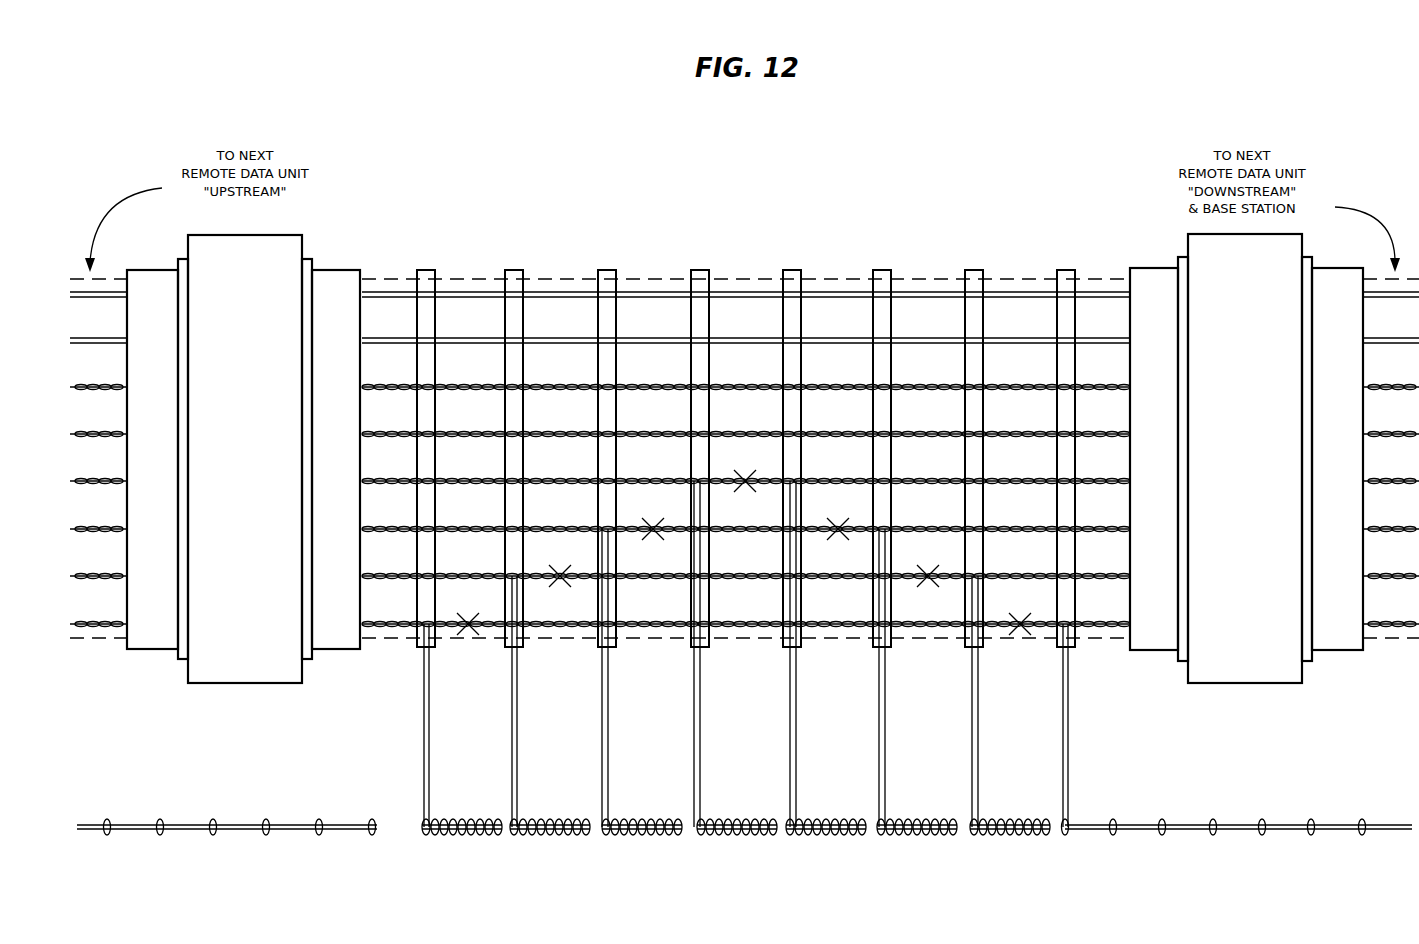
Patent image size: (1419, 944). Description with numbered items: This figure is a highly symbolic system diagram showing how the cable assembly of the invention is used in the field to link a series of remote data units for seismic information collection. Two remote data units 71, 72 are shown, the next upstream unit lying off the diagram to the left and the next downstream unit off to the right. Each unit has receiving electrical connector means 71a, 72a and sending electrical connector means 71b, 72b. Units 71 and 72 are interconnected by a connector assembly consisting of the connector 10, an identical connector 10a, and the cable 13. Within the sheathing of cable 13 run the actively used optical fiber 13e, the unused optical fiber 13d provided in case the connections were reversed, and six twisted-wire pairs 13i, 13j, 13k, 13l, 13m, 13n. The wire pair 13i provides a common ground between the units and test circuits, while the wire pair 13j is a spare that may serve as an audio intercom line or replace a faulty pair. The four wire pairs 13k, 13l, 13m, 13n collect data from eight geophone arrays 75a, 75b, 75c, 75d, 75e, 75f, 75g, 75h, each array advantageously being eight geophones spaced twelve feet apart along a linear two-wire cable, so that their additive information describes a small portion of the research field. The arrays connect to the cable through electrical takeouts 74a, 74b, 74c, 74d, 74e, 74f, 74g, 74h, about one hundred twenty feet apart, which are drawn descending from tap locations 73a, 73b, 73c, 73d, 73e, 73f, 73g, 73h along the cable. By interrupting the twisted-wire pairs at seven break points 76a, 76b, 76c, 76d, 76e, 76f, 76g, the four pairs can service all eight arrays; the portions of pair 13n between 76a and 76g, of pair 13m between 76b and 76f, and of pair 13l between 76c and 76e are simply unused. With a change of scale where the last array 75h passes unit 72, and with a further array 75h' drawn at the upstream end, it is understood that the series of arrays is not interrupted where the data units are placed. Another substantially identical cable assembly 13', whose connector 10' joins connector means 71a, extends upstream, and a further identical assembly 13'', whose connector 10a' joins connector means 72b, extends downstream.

The connector 10 is at (1154, 436).
The connector 10' is at (152, 438).
The connector 10a is at (342, 438).
The connector 10a' is at (1337, 436).
The cable 13 is at (746, 466).
The cable assembly 13' is at (98, 483).
The cable assembly 13'' is at (1391, 483).
The unused optical fiber 13d is at (447, 338).
The optical fiber 13e is at (445, 292).
The wire pair 13i is at (400, 387).
The wire pair 13j is at (400, 434).
The wire pair 13k is at (400, 481).
The wire pair 13l is at (400, 529).
The wire pair 13m is at (403, 576).
The wire pair 13n is at (400, 624).
The remote data unit 71 is at (250, 683).
The receiving electrical connector means 71a is at (183, 660).
The sending electrical connector means 71b is at (305, 660).
The remote data unit 72 is at (1220, 683).
The receiving electrical connector means 72a is at (1182, 663).
The sending electrical connector means 72b is at (1305, 663).
The tap connector 73a is at (427, 270).
The tap connector 73b is at (517, 270).
The tap connector 73c is at (610, 270).
The tap connector 73d is at (702, 270).
The tap connector 73e is at (795, 270).
The tap connector 73f is at (885, 270).
The tap connector 73g is at (977, 270).
The tap connector 73h is at (1068, 270).
The electrical takeout 74a is at (429, 700).
The electrical takeout 74b is at (517, 698).
The electrical takeout 74c is at (608, 698).
The electrical takeout 74d is at (700, 698).
The electrical takeout 74e is at (796, 703).
The electrical takeout 74f is at (885, 712).
The electrical takeout 74g is at (978, 710).
The electrical takeout 74h is at (1068, 722).
The geophone array 75a is at (477, 835).
The geophone array 75b is at (580, 835).
The geophone array 75c is at (672, 835).
The geophone array 75d is at (766, 835).
The geophone array 75e is at (853, 835).
The geophone array 75f is at (950, 835).
The geophone array 75g is at (1042, 835).
The geophone array 75h is at (1237, 844).
The sensor loop string 75h' is at (227, 845).
The break point 76a is at (468, 630).
The break point 76b is at (560, 582).
The break point 76c is at (653, 535).
The break point 76d is at (745, 487).
The break point 76e is at (838, 535).
The break point 76f is at (928, 582).
The break point 76g is at (1020, 630).